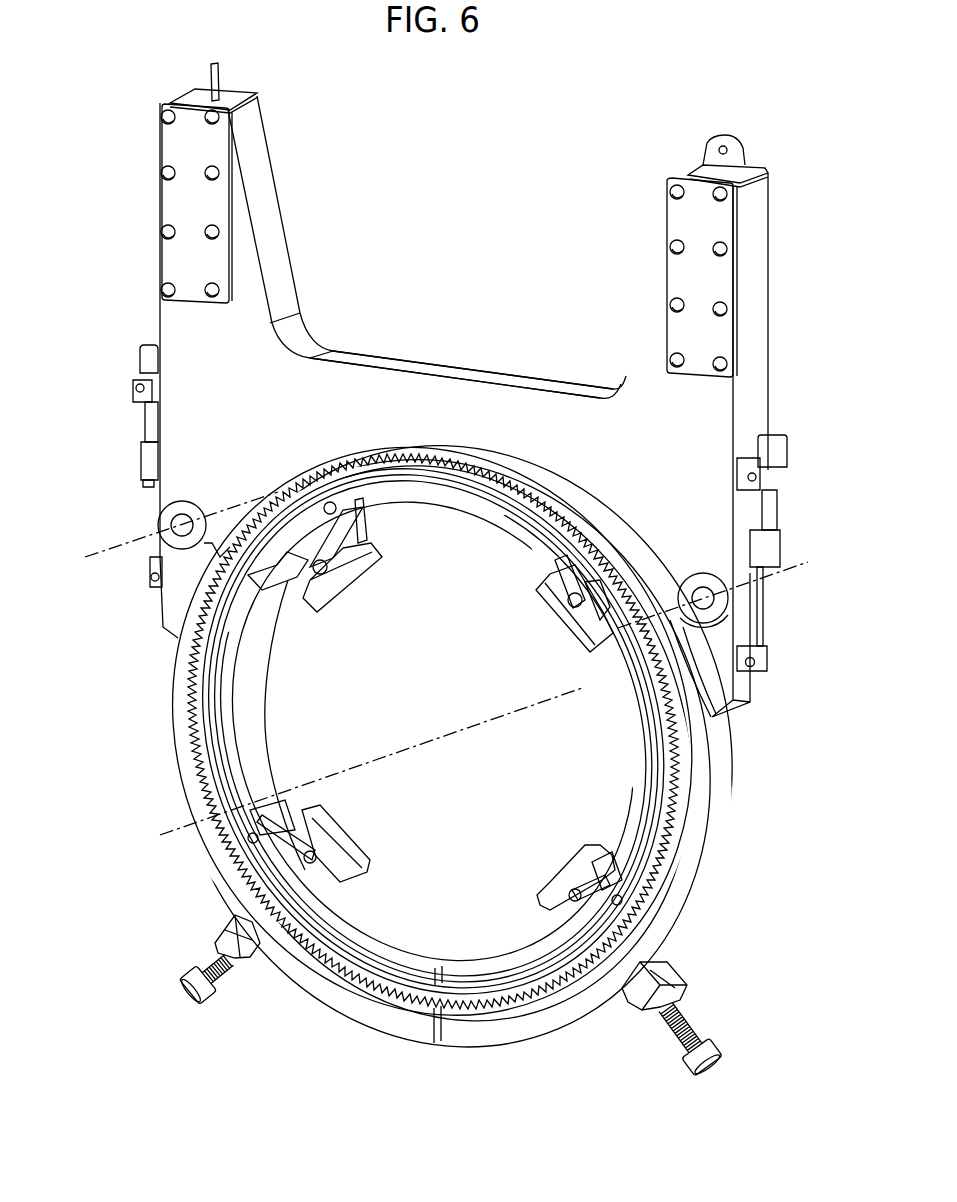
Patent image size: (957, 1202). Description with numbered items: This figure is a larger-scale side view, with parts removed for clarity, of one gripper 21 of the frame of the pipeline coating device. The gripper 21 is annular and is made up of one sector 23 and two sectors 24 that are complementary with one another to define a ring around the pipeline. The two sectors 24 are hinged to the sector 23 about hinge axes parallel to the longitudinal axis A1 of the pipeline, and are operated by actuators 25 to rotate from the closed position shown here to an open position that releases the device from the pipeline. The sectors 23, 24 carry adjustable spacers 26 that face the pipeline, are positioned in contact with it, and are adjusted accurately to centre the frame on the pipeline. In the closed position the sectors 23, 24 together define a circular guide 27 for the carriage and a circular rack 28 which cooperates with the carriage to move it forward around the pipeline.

The gripper 21 is at (812, 158).
The sector 23 is at (462, 397).
The sector 24 is at (690, 866).
The actuator 25 is at (92, 386).
The adjustable spacer 26 is at (351, 598).
The circular guide 27 is at (672, 790).
The circular rack 28 is at (672, 746).
The longitudinal axis A1 is at (628, 699).